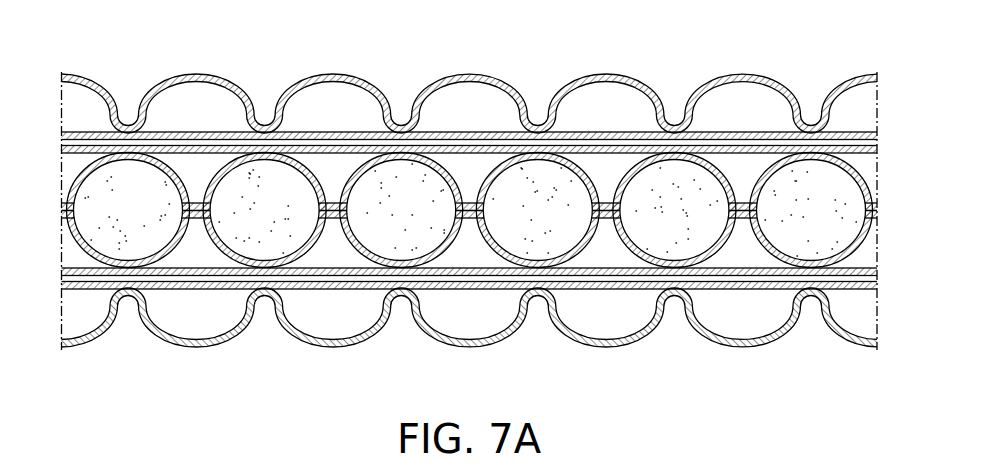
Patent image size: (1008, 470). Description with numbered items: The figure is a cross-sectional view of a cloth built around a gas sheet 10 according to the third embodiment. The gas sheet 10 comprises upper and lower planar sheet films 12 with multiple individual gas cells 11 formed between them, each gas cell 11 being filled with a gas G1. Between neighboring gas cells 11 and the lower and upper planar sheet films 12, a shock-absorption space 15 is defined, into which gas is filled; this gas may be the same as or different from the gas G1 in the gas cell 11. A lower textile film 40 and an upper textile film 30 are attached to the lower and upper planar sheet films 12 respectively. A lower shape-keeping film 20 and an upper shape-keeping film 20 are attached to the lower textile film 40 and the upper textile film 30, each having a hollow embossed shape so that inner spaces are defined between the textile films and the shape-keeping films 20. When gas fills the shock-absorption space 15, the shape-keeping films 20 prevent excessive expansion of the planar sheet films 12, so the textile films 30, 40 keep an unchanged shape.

The gas sheet 10 is at (483, 215).
The gas cell 11 is at (470, 210).
The planar sheet film 12 is at (470, 136).
The shock-absorption space 15 is at (470, 210).
The shape-keeping film 20 is at (483, 210).
The upper textile film 30 is at (470, 150).
The lower textile film 40 is at (470, 278).
The gas filled in the gas cell G1 is at (808, 225).